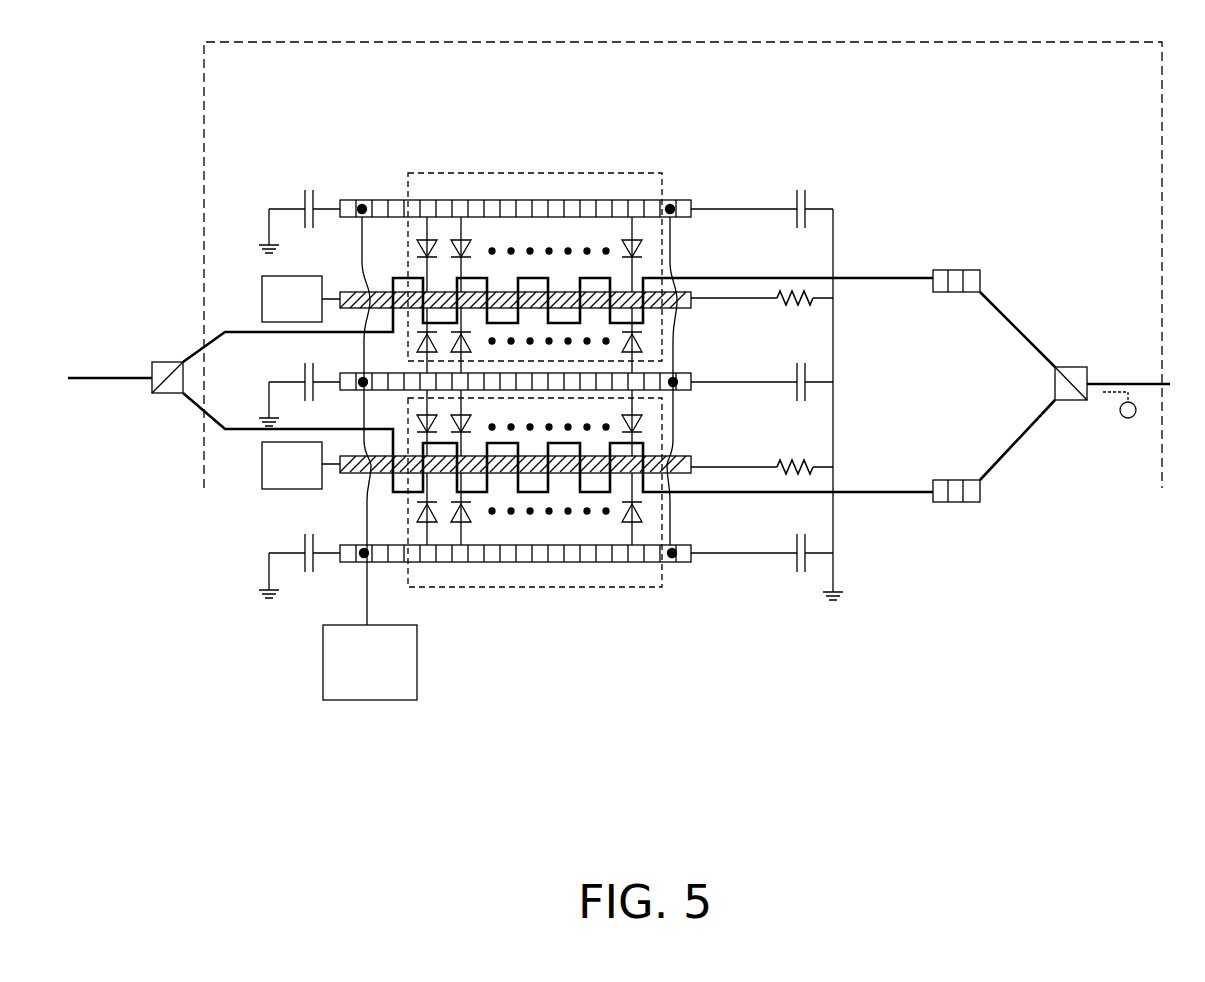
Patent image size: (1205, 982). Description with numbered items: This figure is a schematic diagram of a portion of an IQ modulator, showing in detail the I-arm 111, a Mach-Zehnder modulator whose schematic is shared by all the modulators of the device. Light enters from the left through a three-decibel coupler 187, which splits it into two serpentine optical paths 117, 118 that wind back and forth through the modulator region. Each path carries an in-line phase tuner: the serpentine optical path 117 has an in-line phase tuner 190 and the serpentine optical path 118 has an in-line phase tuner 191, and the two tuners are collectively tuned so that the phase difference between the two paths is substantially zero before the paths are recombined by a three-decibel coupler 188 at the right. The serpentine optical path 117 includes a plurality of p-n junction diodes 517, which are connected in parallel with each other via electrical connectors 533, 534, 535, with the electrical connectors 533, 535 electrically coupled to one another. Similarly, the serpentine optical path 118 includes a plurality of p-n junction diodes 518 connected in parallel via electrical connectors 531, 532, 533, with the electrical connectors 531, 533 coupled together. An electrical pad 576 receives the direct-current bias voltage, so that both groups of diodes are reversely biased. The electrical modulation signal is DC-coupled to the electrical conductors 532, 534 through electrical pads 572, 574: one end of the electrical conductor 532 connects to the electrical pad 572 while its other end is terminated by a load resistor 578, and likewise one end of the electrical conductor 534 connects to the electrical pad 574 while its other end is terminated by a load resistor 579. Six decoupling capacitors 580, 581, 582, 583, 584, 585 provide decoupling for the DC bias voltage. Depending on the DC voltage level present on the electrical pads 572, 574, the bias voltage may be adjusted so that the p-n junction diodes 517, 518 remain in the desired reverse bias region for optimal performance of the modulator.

The I-arm 111 is at (698, 42).
The serpentine optical path 117 is at (863, 488).
The serpentine optical path 118 is at (863, 278).
The 3 dB coupler 187 is at (161, 362).
The 3 dB coupler 188 is at (1070, 367).
The in-line phase tuner 190 is at (948, 502).
The in-line phase tuner 191 is at (950, 270).
The p-n junction diodes 517 is at (570, 587).
The p-n junction diodes 518 is at (440, 173).
The electrical connector 531 is at (692, 205).
The electrical conductor 532 is at (692, 295).
The electrical connector 533 is at (692, 378).
The electrical conductor 534 is at (692, 462).
The electrical connector 535 is at (692, 548).
The electrical pad 572 is at (292, 299).
The electrical pad 574 is at (292, 465).
The electrical pad 576 is at (417, 660).
The load resistor 578 is at (815, 313).
The load resistor 579 is at (815, 450).
The decoupling capacitor 580 is at (302, 185).
The decoupling capacitor 581 is at (302, 357).
The decoupling capacitor 582 is at (302, 530).
The decoupling capacitor 583 is at (801, 181).
The decoupling capacitor 584 is at (801, 353).
The decoupling capacitor 585 is at (801, 526).